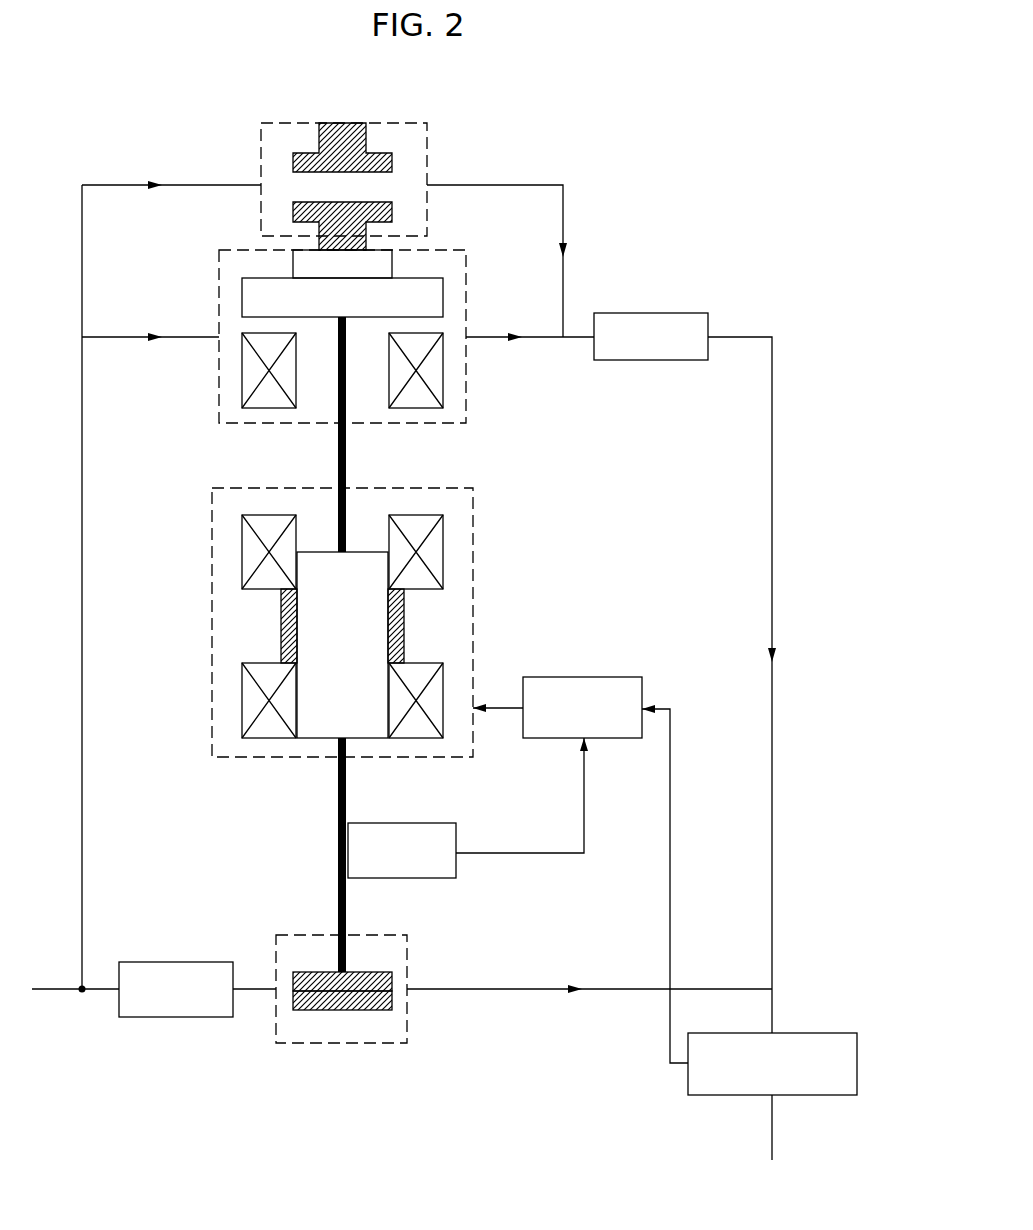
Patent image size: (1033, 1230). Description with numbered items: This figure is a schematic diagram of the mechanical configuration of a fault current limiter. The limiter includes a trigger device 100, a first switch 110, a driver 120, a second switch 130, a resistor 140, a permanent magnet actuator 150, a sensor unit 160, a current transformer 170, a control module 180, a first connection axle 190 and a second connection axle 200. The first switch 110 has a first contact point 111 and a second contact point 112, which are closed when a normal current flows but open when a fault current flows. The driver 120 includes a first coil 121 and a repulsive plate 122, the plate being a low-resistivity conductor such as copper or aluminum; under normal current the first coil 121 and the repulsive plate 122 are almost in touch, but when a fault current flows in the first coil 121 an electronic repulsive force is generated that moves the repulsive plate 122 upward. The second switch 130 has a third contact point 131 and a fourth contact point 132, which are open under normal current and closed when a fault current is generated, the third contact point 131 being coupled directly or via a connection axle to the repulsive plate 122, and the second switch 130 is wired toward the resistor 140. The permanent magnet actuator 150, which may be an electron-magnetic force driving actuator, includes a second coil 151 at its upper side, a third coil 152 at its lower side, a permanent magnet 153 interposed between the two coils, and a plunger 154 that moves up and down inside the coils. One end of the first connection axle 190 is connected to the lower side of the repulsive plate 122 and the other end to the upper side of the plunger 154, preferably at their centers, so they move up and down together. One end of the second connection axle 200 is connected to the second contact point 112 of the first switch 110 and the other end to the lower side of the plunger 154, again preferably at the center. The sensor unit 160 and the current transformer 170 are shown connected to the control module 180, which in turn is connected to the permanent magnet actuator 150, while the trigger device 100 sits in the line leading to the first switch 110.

The trigger device 100 is at (200, 962).
The first switch 110 is at (322, 1043).
The first contact point 111 is at (392, 1000).
The second contact point 112 is at (392, 975).
The driver 120 is at (466, 258).
The first coil 121 is at (443, 380).
The repulsive plate 122 is at (443, 298).
The second switch 130 is at (427, 133).
The third contact point 131 is at (293, 210).
The fourth contact point 132 is at (293, 160).
The resistor 140 is at (704, 301).
The permanent magnet actuator 150 is at (440, 488).
The second coil 151 is at (437, 543).
The third coil 152 is at (443, 680).
The permanent magnet 153 is at (400, 618).
The plunger 154 is at (318, 722).
The sensor unit 160 is at (430, 823).
The current transformer 170 is at (705, 1095).
The control module 180 is at (608, 677).
The first connection axle 190 is at (339, 455).
The second connection axle 200 is at (339, 893).